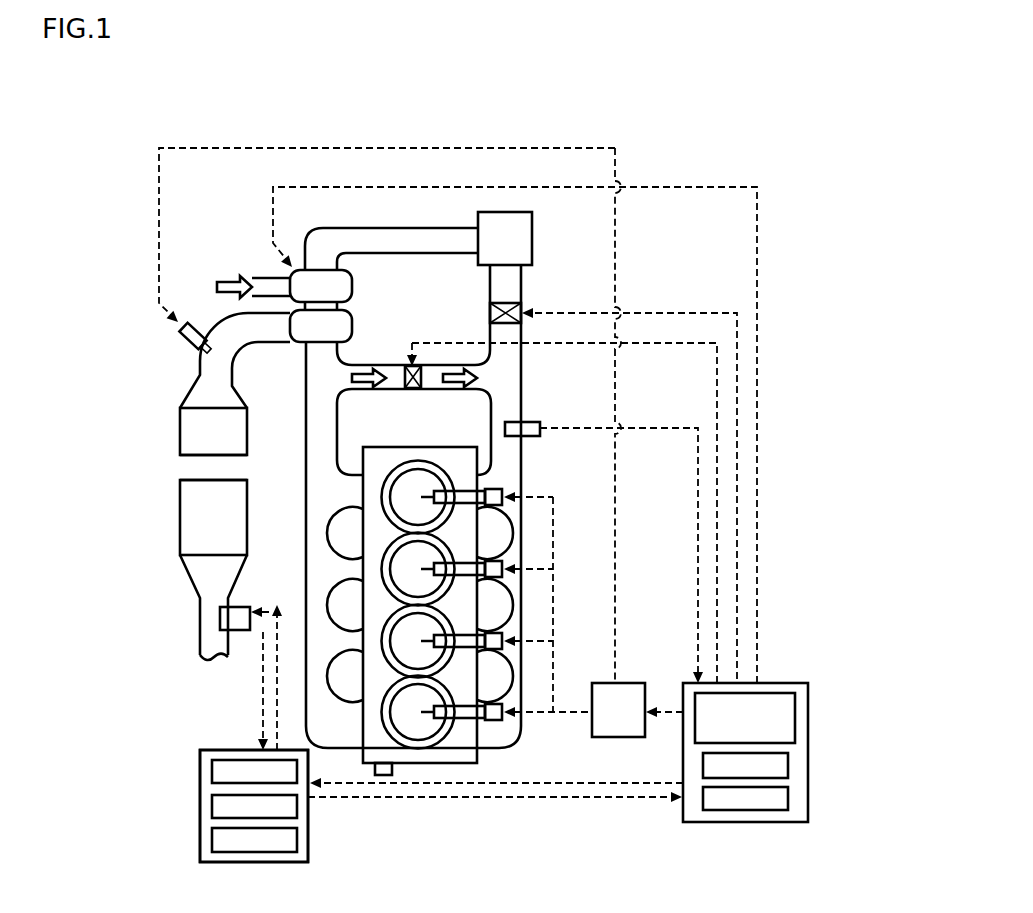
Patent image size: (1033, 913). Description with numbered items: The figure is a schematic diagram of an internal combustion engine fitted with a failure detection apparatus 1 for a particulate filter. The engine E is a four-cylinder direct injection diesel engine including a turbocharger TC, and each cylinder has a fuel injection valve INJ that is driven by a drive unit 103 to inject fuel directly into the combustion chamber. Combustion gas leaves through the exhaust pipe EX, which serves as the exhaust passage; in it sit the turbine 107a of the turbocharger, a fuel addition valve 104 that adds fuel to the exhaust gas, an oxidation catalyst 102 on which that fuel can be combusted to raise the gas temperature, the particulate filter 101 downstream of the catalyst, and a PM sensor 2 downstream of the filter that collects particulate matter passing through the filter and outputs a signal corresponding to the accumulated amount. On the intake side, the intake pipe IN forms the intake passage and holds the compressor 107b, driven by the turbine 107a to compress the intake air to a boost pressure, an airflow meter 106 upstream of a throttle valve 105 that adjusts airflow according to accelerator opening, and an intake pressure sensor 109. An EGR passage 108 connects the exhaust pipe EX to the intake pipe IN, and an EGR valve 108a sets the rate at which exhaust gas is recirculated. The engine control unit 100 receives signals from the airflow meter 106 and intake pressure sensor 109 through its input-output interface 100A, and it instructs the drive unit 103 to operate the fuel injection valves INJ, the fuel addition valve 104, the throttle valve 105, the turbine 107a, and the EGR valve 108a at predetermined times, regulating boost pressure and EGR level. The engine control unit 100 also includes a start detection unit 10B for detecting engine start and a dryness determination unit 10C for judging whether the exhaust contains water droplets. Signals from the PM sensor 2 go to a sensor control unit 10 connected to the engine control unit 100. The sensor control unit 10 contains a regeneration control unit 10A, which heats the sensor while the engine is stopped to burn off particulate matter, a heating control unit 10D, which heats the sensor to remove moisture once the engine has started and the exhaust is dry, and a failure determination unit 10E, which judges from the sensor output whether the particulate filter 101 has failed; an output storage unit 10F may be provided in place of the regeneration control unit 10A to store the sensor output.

The failure detection apparatus 1 is at (442, 813).
The PM sensor 2 is at (237, 620).
The sensor control unit 10 is at (308, 845).
The regeneration control unit 10A is at (217, 773).
The start detection unit 10B is at (775, 765).
The dryness determination unit 10C is at (775, 800).
The heating control unit 10D is at (217, 807).
The failure determination unit 10E is at (217, 843).
The output storage unit 10F is at (196, 790).
The engine control unit 100 is at (808, 712).
The input-output interface 100A is at (778, 705).
The particulate filter 101 is at (215, 523).
The oxidation catalyst 102 is at (215, 442).
The drive unit 103 is at (628, 700).
The fuel addition valve 104 is at (185, 348).
The throttle valve 105 is at (507, 305).
The airflow meter 106 is at (517, 233).
The turbine 107a is at (340, 324).
The compressor 107b is at (338, 292).
The EGR passage 108 is at (395, 378).
The EGR valve 108a is at (447, 395).
The intake pressure sensor 109 is at (527, 427).
The fuel injection valve INJ is at (463, 497).
The engine E is at (373, 500).
The exhaust pipe EX is at (217, 383).
The intake pipe IN is at (353, 240).
The turbocharger TC is at (356, 303).